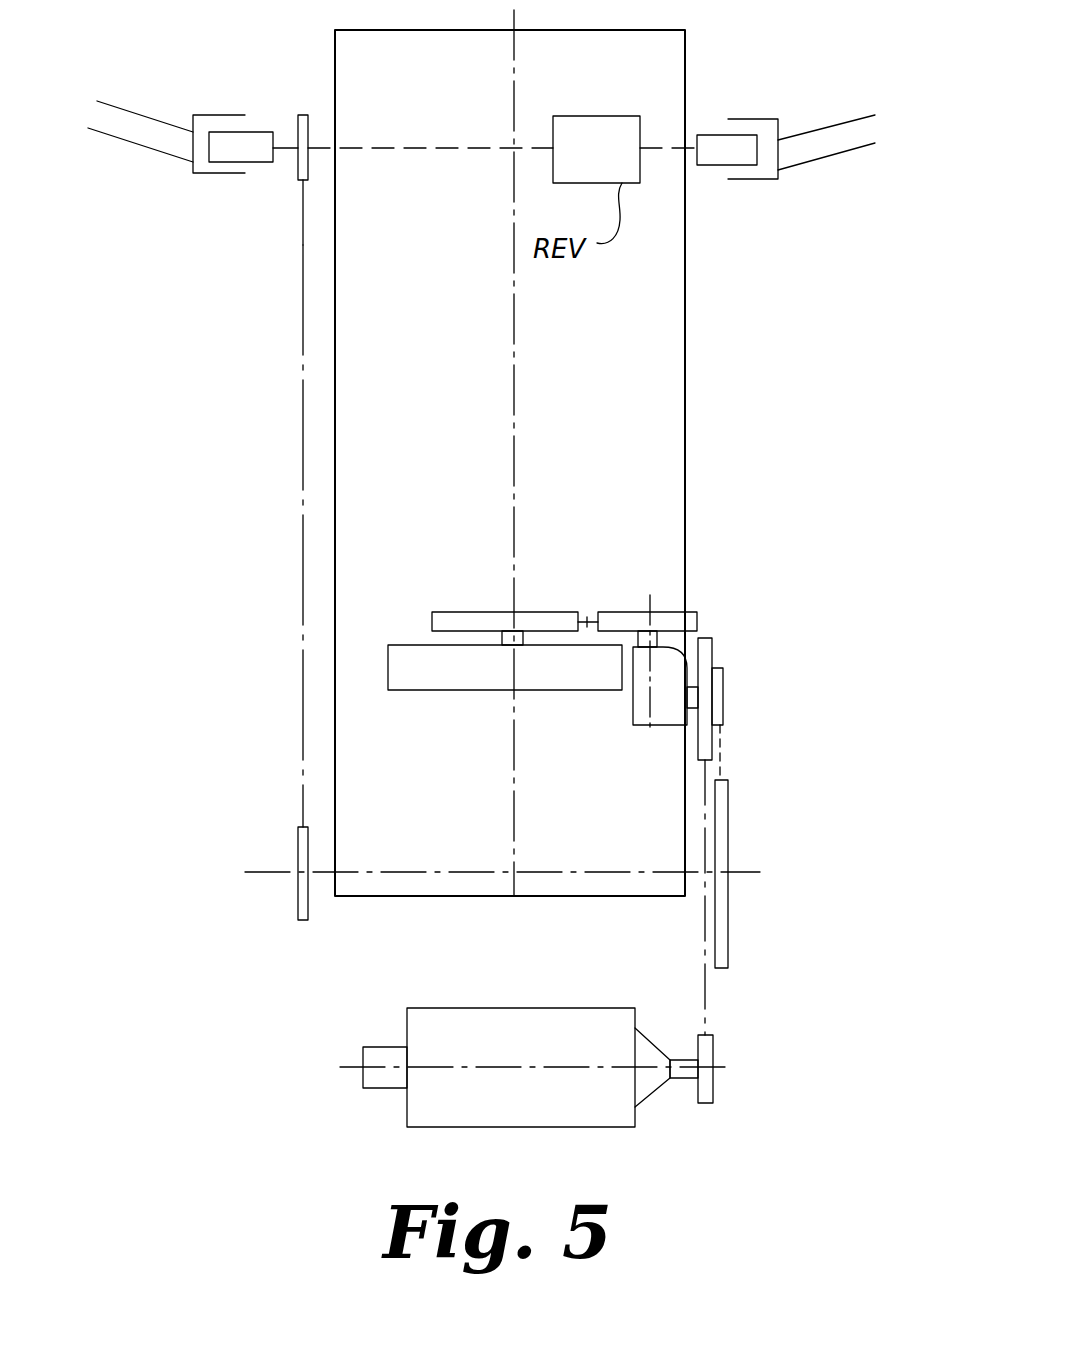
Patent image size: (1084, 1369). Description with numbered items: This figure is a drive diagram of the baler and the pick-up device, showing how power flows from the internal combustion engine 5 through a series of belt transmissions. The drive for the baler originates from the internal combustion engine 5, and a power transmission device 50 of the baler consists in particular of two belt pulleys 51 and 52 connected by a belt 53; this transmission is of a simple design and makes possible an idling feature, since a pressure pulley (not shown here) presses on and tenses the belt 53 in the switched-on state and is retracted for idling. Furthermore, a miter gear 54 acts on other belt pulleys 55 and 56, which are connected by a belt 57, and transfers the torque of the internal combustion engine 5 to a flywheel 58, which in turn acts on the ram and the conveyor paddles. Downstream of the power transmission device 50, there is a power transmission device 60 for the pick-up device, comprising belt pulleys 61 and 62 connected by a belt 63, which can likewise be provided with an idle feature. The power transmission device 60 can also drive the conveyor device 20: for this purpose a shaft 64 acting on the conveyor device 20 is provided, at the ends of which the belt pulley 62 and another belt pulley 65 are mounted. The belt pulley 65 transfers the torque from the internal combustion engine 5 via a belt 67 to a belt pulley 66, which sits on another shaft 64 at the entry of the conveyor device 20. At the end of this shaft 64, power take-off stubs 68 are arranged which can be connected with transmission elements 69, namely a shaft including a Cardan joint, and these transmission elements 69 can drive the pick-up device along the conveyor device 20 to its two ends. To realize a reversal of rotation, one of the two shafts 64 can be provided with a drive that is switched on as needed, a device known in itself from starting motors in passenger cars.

The internal combustion engine 5 is at (485, 1020).
The conveyor device 20 is at (685, 345).
The power transmission device 50 is at (665, 942).
The belt pulley 51 is at (715, 1082).
The belt pulley 52 is at (707, 657).
The belt 53 is at (712, 1007).
The miter gear 54 is at (670, 720).
The belt pulley 55 is at (628, 622).
The belt pulley 56 is at (448, 622).
The belt 57 is at (587, 620).
The flywheel 58 is at (477, 682).
The power transmission device 60 is at (805, 790).
The belt pulley 61 is at (723, 712).
The belt pulley 62 is at (728, 885).
The belt 63 is at (722, 737).
The shaft 64 is at (472, 150).
The belt pulley 65 is at (298, 903).
The belt pulley 66 is at (298, 170).
The belt 67 is at (303, 539).
The power take-off stubs 68 is at (258, 162).
The transmission elements 69 is at (177, 143).